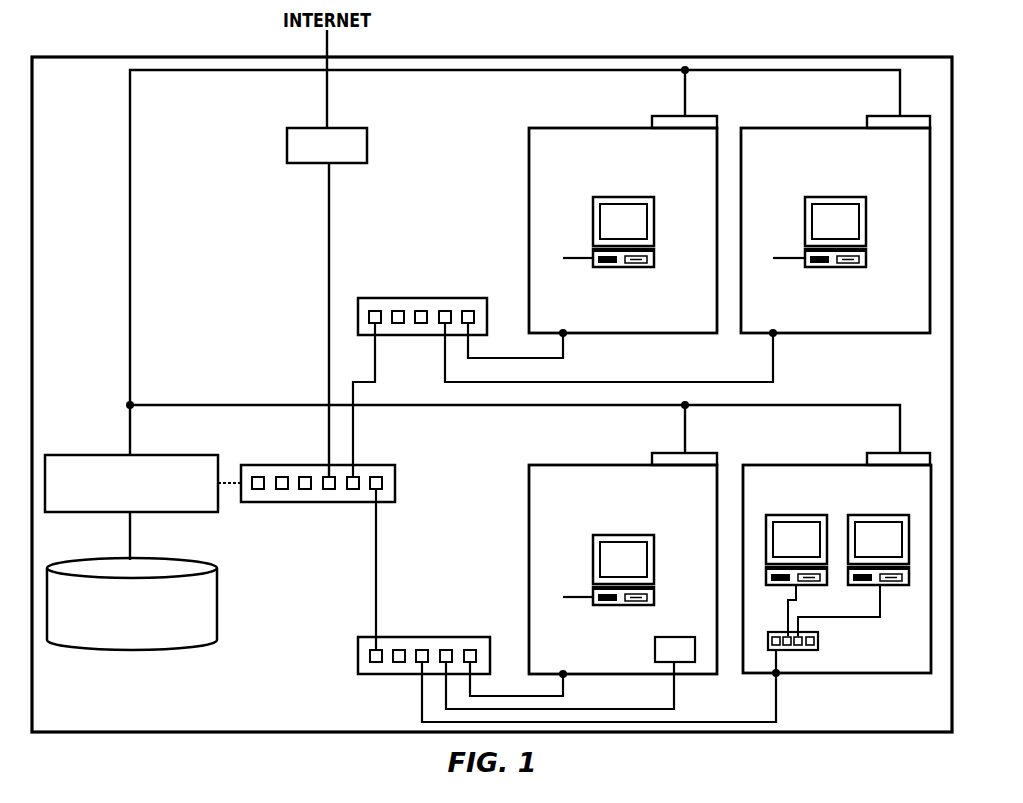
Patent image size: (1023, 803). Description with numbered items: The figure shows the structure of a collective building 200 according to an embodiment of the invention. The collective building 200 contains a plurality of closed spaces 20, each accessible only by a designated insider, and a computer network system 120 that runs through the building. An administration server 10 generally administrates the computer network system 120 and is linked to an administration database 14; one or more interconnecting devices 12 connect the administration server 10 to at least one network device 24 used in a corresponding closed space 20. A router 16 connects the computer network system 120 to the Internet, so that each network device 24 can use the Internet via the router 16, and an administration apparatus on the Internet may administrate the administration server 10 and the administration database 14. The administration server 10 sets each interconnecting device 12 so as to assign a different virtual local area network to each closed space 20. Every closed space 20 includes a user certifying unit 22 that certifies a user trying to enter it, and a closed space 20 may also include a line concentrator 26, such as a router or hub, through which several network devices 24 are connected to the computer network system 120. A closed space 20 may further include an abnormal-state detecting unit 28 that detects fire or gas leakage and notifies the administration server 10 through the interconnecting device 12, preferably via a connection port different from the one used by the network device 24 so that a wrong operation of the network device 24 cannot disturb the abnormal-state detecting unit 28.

The administration server 10 is at (199, 455).
The interconnecting device 12 is at (418, 301).
The administration database 14 is at (201, 560).
The router 16 is at (348, 128).
The closed space 20 is at (592, 128).
The user certifying unit 22 is at (703, 117).
The network device 24 is at (622, 197).
The line concentrator 26 is at (818, 639).
The abnormal-state detecting unit 28 is at (674, 636).
The computer network system 120 is at (946, 183).
The collective building 200 is at (919, 57).